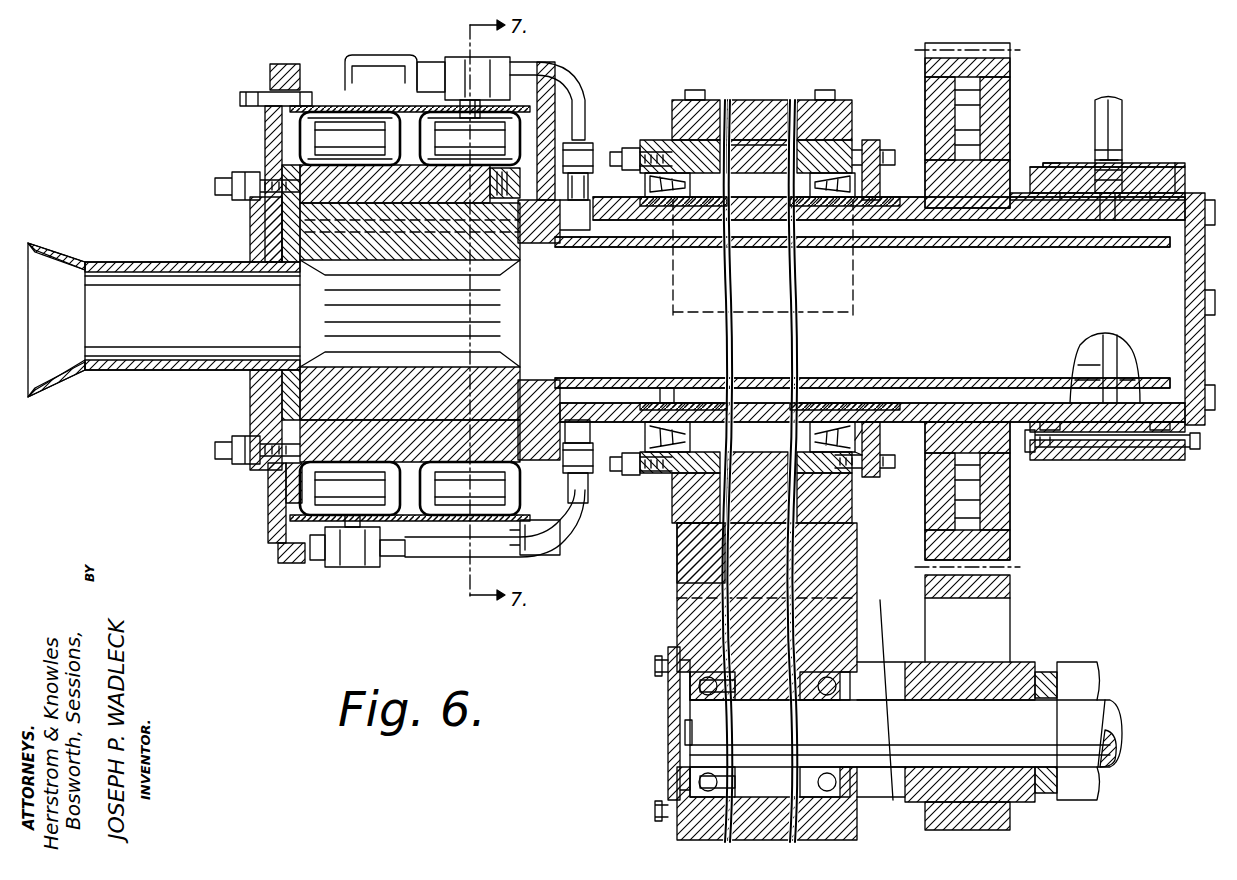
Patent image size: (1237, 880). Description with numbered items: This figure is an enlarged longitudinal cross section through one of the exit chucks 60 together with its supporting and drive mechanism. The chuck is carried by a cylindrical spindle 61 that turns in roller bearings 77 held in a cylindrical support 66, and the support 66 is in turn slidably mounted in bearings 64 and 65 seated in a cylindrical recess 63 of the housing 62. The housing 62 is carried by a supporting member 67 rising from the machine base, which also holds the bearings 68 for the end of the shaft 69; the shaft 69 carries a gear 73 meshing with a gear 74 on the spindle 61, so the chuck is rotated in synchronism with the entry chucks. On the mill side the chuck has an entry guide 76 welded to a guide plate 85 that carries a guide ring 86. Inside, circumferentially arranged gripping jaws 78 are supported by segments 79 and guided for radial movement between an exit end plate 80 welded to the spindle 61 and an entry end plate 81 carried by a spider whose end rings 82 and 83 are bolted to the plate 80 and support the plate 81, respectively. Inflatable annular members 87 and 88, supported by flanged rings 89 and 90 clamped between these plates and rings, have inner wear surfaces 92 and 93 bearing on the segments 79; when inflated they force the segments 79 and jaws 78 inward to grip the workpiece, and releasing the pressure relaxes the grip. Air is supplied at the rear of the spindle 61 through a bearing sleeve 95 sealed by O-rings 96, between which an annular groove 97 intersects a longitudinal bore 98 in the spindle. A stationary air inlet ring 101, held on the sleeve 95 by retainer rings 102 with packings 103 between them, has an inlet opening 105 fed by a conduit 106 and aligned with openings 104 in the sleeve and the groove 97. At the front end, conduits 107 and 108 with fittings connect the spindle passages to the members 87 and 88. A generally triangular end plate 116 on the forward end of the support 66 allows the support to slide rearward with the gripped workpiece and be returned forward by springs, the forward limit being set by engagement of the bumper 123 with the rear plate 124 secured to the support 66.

The exit chuck 60 is at (325, 105).
The spindle 61 is at (880, 210).
The housing 62 is at (750, 110).
The cylindrical recess 63 is at (698, 120).
The bearing 64 is at (680, 145).
The bearing 65 is at (830, 132).
The cylindrical support 66 is at (632, 150).
The supporting member 67 is at (680, 555).
The bearing 68 is at (680, 695).
The shaft 69 is at (906, 733).
The gear 73 is at (1158, 158).
The gear 74 is at (1010, 68).
The entry guide 76 is at (165, 255).
The roller bearing 77 is at (820, 436).
The gripping jaw 78 is at (410, 311).
The segment 79 is at (410, 313).
The exit end plate 80 is at (535, 400).
The entry end plate 81 is at (268, 495).
The end ring 82 is at (552, 555).
The end ring 83 is at (278, 556).
The guide plate 85 is at (250, 392).
The guide ring 86 is at (282, 402).
The inflatable annular member 87 is at (440, 472).
The inflatable annular member 88 is at (330, 470).
The flanged ring 89 is at (440, 516).
The flanged ring 90 is at (380, 522).
The wear surface 92 is at (490, 165).
The wear surface 93 is at (345, 165).
The bearing sleeve 95 is at (1185, 204).
The O-ring 96 is at (1050, 440).
The annular groove 97 is at (1115, 358).
The bore 98 is at (862, 308).
The air inlet ring 101 is at (1042, 165).
The retainer ring 102 is at (1032, 165).
The packing 103 is at (1082, 190).
The opening 104 is at (1095, 215).
The inlet opening 105 is at (1122, 165).
The conduit 106 is at (1115, 105).
The conduit 107 is at (575, 90).
The conduit 108 is at (448, 558).
The end plate 116 is at (660, 396).
The bumper 123 is at (860, 487).
The rear plate 124 is at (882, 135).